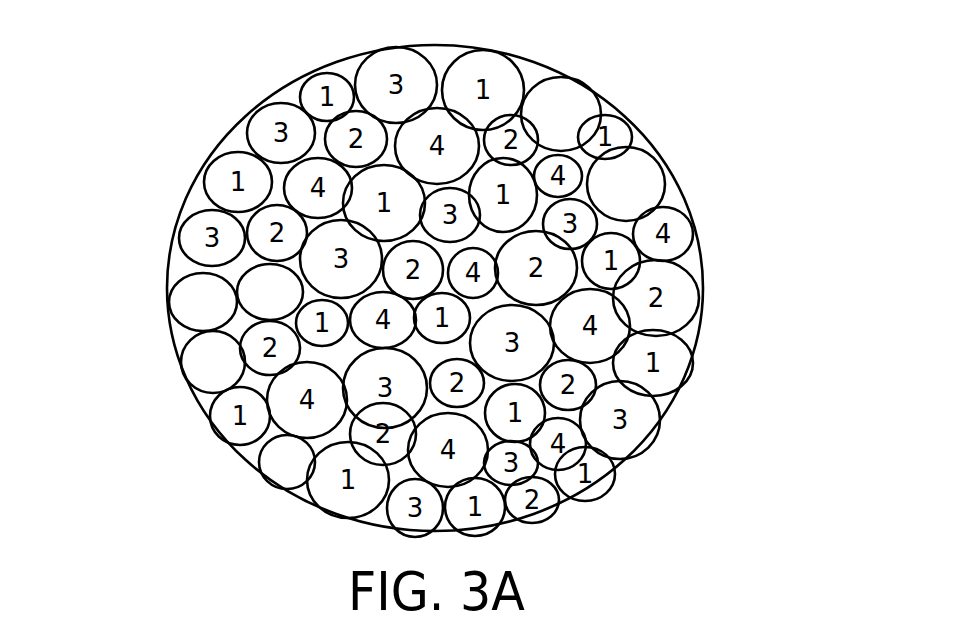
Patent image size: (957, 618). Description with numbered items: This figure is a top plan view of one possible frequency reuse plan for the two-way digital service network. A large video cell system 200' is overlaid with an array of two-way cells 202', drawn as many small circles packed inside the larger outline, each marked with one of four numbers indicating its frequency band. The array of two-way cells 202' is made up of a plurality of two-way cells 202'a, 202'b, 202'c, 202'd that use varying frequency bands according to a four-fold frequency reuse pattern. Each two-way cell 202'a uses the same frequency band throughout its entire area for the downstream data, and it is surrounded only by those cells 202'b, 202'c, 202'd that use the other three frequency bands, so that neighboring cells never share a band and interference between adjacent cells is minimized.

The video cell system 200' is at (508, 297).
The two-way cells 202' is at (666, 145).
The two-way cell 202'a is at (143, 302).
The two-way cell 202'b is at (228, 471).
The two-way cell 202'c is at (161, 375).
The two-way cell 202'd is at (186, 261).